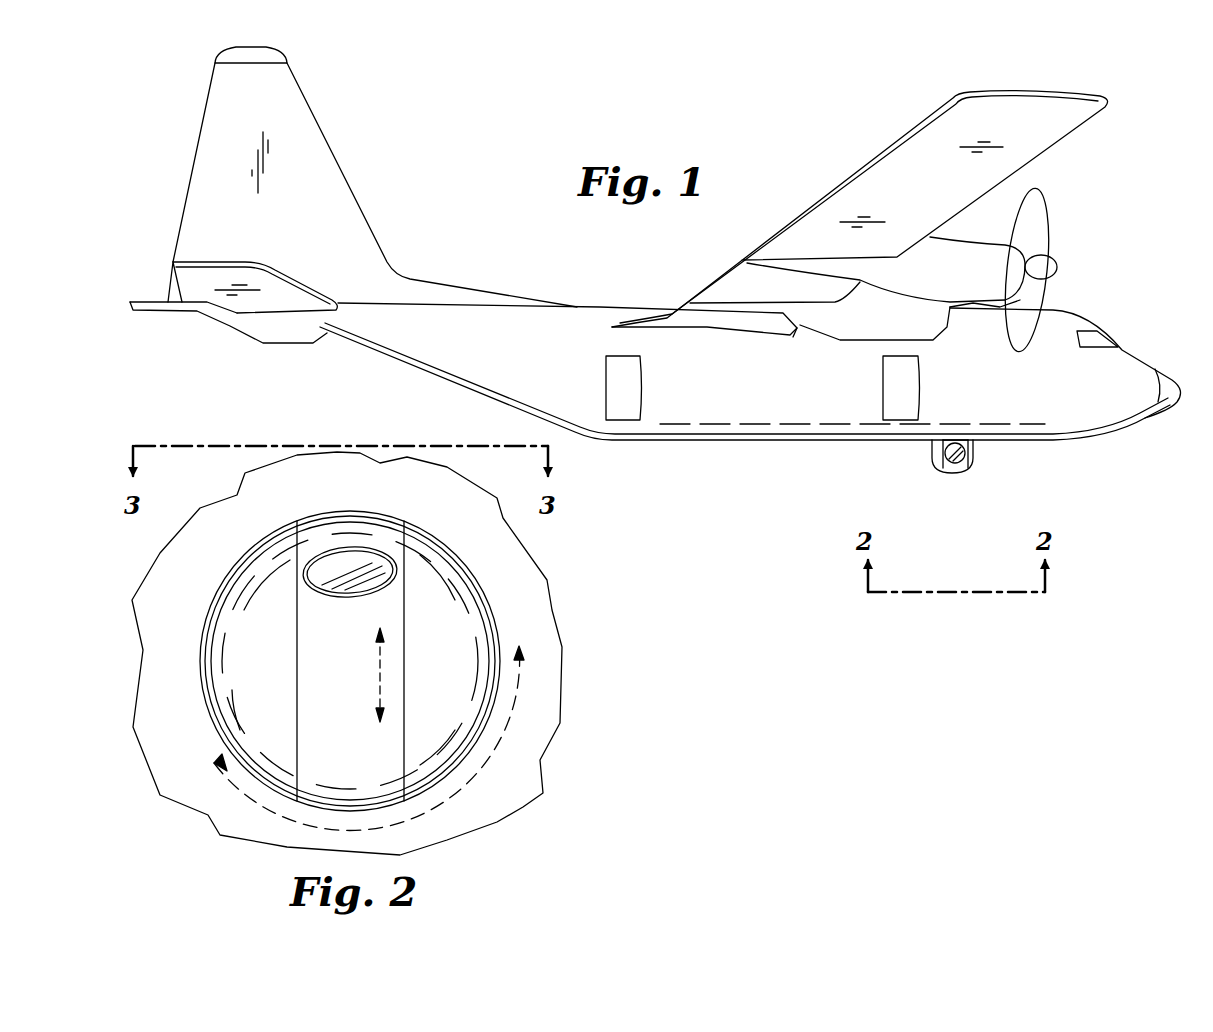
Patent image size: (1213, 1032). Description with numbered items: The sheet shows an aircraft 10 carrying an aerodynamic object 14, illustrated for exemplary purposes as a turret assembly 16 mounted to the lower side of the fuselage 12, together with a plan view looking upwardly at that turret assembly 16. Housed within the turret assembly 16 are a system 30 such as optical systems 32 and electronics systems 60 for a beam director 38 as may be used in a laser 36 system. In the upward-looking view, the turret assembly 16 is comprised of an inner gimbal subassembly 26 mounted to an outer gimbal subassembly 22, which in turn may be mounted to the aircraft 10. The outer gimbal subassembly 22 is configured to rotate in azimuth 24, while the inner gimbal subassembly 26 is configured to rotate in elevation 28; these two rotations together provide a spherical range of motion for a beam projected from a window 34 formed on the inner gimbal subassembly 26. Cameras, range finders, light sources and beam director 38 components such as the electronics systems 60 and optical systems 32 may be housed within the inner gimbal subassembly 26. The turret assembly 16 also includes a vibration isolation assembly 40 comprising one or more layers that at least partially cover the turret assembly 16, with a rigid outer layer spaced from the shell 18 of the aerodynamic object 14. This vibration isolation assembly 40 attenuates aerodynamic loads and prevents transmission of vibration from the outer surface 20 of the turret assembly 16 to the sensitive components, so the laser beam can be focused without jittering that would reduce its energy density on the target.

In FIG. 1, the aircraft 10 is at (1143, 186).
In FIG. 2, the aircraft 10 is at (391, 653).
In FIG. 1, the fuselage 12 is at (730, 420).
In FIG. 2, the fuselage 12 is at (537, 727).
In FIG. 1, the aerodynamic object 14 is at (922, 473).
In FIG. 2, the aerodynamic object 14 is at (428, 661).
In FIG. 1, the turret assembly 16 is at (940, 470).
In FIG. 2, the turret assembly 16 is at (488, 620).
In FIG. 2, the shell 18 is at (428, 681).
In FIG. 2, the outer surface 20 is at (460, 748).
In FIG. 2, the outer gimbal subassembly 22 is at (302, 670).
In FIG. 2, the azimuth 24 is at (430, 813).
In FIG. 2, the inner gimbal subassembly 26 is at (318, 802).
In FIG. 2, the elevation 28 is at (260, 735).
In FIG. 1, the system 30 is at (978, 486).
In FIG. 2, the system 30 is at (217, 639).
In FIG. 1, the optical systems 32 is at (955, 470).
In FIG. 2, the optical systems 32 is at (217, 639).
In FIG. 2, the window 34 is at (345, 555).
In FIG. 1, the laser 36 is at (973, 457).
In FIG. 2, the laser 36 is at (181, 661).
In FIG. 2, the beam director 38 is at (305, 637).
In FIG. 1, the vibration isolation assembly 40 is at (932, 448).
In FIG. 2, the electronics systems 60 is at (300, 572).